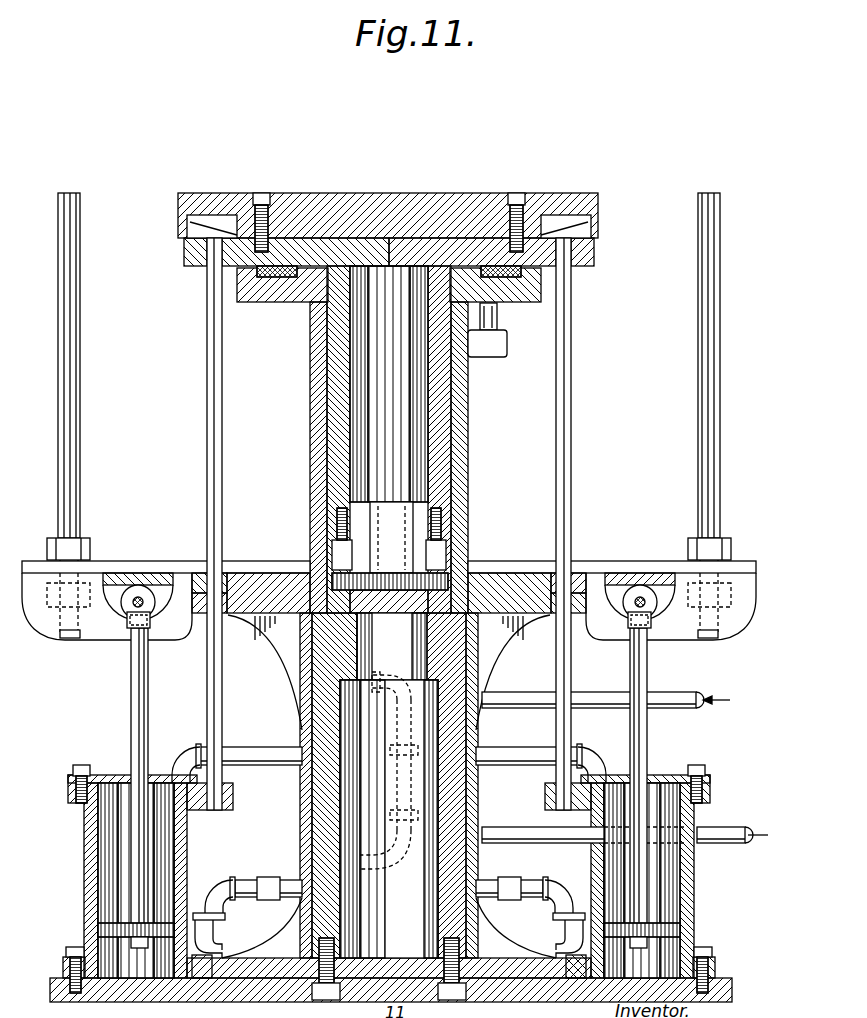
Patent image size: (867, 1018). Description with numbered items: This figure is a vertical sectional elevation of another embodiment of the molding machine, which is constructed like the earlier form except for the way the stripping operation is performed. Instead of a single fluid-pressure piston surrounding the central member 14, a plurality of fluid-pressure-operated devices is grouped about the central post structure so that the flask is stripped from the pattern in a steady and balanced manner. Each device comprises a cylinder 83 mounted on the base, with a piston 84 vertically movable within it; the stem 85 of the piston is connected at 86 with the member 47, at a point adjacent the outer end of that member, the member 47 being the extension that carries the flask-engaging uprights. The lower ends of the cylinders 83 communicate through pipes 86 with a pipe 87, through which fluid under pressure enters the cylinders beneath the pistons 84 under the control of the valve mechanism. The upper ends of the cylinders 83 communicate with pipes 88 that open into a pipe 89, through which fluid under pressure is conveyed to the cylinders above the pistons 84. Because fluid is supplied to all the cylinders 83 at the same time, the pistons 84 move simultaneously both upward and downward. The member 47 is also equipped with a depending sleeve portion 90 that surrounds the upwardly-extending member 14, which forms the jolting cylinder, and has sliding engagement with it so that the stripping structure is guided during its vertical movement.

The member 14 is at (320, 852).
The member 47 is at (273, 642).
The cylinder 83 is at (697, 862).
The piston 84 is at (672, 921).
The stem 85 is at (651, 739).
The pipe 86 is at (648, 609).
The pipe 87 is at (625, 848).
The pipe 88 is at (278, 758).
The pipe 89 is at (591, 697).
The depending sleeve portion 90 is at (302, 832).